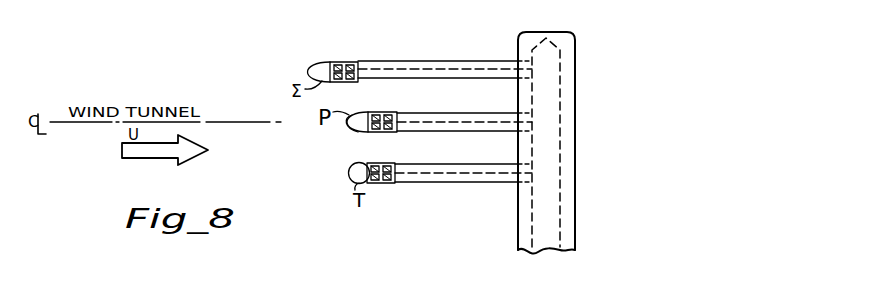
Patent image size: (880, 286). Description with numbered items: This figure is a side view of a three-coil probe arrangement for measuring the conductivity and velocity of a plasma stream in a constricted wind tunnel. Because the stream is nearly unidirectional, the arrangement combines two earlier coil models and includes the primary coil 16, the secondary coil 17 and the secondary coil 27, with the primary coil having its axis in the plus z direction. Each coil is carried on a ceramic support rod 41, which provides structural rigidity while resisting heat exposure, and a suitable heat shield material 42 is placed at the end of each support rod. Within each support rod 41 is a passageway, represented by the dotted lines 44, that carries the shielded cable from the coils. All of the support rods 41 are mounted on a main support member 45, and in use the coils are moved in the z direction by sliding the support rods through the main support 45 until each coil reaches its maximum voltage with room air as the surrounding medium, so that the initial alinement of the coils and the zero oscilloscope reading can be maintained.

The primary coil 16 is at (369, 112).
The secondary coil 17 is at (340, 63).
The secondary coil 27 is at (366, 163).
The ceramic support rod 41 is at (397, 61).
The heat shield material 42 is at (316, 65).
The passageway 44 is at (507, 76).
The main support member 45 is at (576, 100).